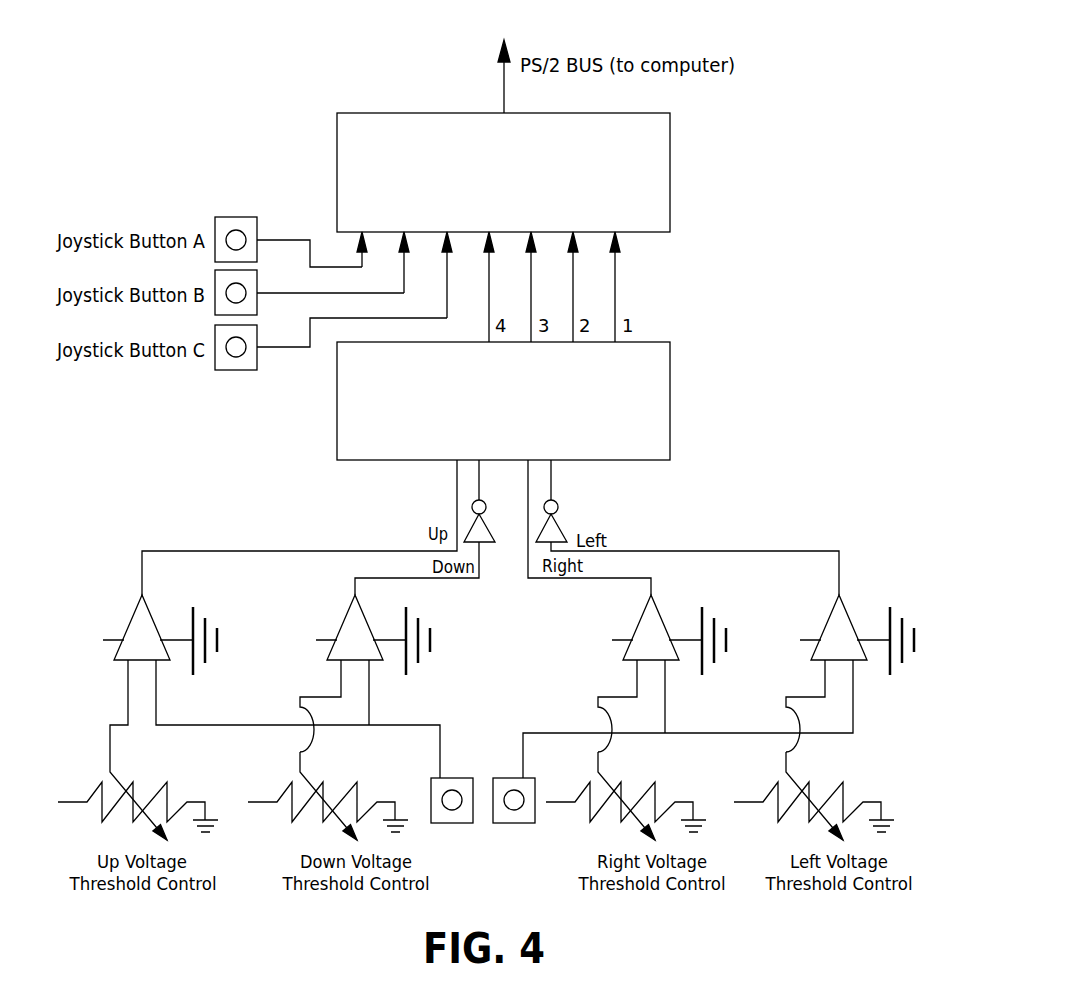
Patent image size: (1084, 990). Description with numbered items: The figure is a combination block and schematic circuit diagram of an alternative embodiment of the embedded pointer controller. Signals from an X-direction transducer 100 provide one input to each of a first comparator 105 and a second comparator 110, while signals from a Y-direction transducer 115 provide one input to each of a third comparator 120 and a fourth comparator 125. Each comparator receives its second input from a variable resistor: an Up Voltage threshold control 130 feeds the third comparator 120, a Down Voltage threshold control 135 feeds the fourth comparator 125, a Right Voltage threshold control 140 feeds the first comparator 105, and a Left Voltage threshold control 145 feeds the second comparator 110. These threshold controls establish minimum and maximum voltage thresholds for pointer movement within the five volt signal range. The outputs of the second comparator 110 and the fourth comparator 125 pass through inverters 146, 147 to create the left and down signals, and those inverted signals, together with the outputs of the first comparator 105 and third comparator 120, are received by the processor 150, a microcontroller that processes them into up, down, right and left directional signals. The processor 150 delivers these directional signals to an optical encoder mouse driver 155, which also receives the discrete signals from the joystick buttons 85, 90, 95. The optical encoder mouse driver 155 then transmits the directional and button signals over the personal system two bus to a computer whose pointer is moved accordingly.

The optical encoder mouse driver 155 is at (337, 134).
The processor 150 is at (337, 395).
The button 85 is at (233, 217).
The button 90 is at (215, 310).
The button 95 is at (223, 370).
The inverter 147 is at (470, 527).
The inverter 146 is at (560, 527).
The third comparator 120 is at (128, 615).
The fourth comparator 125 is at (341, 615).
The first comparator 105 is at (658, 603).
The second comparator 110 is at (848, 603).
The Up Voltage threshold control 130 is at (103, 810).
The Down Voltage threshold control 135 is at (322, 803).
The Right Voltage threshold control 140 is at (620, 803).
The Left Voltage threshold control 145 is at (808, 803).
The Y-direction transducer 115 is at (443, 823).
The X-direction transducer 100 is at (518, 823).